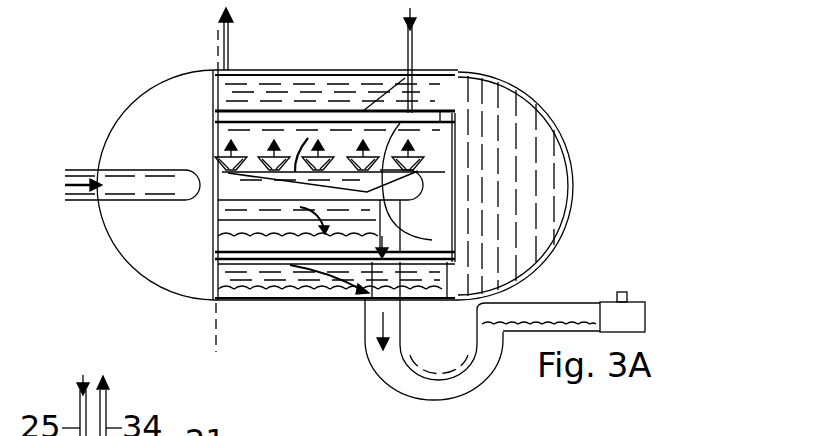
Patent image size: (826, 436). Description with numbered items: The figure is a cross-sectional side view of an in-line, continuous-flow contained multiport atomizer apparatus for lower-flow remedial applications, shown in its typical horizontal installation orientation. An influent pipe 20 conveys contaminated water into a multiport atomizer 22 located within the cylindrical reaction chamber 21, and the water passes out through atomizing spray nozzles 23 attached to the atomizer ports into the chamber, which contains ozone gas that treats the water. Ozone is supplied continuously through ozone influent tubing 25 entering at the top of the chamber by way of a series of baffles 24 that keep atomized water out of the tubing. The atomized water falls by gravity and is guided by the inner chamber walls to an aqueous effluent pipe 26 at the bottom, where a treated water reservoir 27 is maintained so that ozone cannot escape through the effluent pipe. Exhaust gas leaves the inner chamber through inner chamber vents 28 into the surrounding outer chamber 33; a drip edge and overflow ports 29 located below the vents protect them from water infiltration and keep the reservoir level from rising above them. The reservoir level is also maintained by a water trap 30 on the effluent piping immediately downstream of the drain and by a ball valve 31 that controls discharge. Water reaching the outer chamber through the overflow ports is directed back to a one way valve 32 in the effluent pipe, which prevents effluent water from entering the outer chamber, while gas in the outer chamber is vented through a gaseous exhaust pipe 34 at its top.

The influent pipe 20 is at (105, 195).
The cylindrical reaction chamber 21 is at (437, 152).
The multiport atomizer 22 is at (423, 183).
The atomizing spray nozzles 23 is at (367, 192).
The baffles 24 is at (437, 110).
The ozone influent tubing 25 is at (408, 48).
The aqueous effluent pipe 26 is at (455, 257).
The treated water reservoir 27 is at (427, 235).
The inner chamber vents 28 is at (240, 222).
The drip edge and overflow ports 29 is at (240, 240).
The water trap 30 is at (433, 378).
The ball valve 31 is at (622, 292).
The one way valve 32 is at (372, 293).
The outer chamber 33 is at (147, 103).
The gaseous exhaust pipe 34 is at (229, 43).